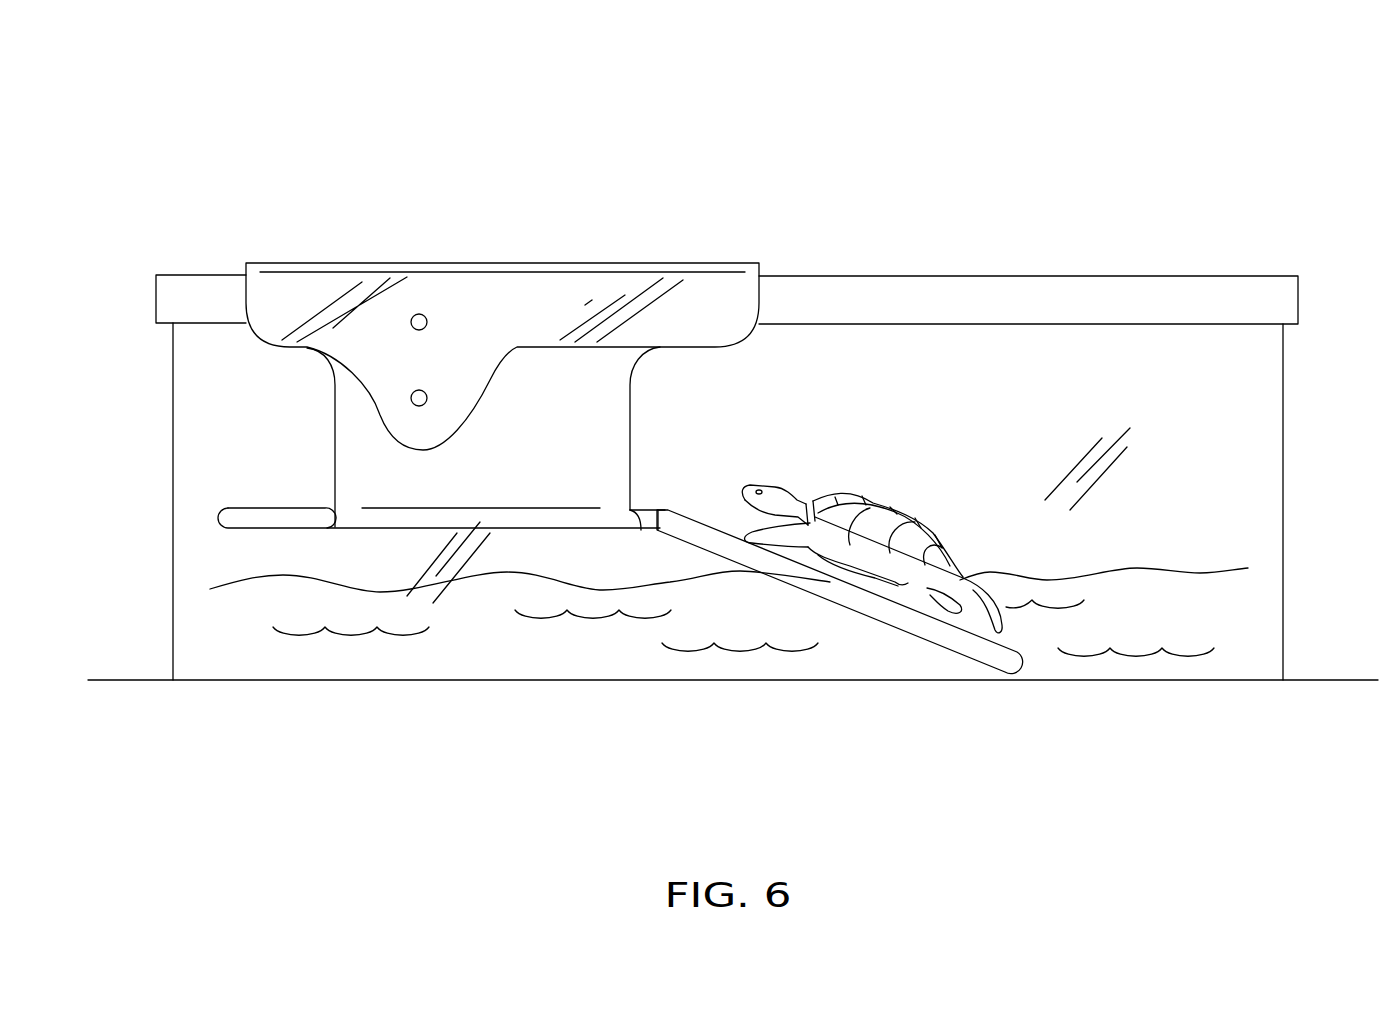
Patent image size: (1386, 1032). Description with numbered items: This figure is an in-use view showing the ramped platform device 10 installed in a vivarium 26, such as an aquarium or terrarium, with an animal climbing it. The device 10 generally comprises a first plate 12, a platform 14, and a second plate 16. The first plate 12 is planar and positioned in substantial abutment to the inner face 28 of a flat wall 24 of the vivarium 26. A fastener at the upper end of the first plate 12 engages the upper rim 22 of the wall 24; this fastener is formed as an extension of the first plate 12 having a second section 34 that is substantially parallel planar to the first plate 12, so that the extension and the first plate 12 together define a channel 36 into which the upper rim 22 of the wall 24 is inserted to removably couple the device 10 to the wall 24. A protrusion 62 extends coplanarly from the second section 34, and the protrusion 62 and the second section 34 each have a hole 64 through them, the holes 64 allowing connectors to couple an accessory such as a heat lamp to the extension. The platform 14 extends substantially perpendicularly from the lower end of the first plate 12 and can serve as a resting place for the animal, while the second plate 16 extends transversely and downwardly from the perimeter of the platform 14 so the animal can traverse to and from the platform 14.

The ramped platform device 10 is at (950, 125).
The first plate 12 is at (357, 478).
The platform 14 is at (253, 520).
The second plate 16 is at (805, 585).
The upper rim 22 is at (863, 275).
The wall 24 is at (982, 307).
The vivarium 26 is at (1283, 410).
The inner face 28 is at (971, 420).
The second section 34 is at (651, 291).
The channel 36 is at (588, 303).
The protrusion 62 is at (377, 362).
The hole 64 is at (427, 321).